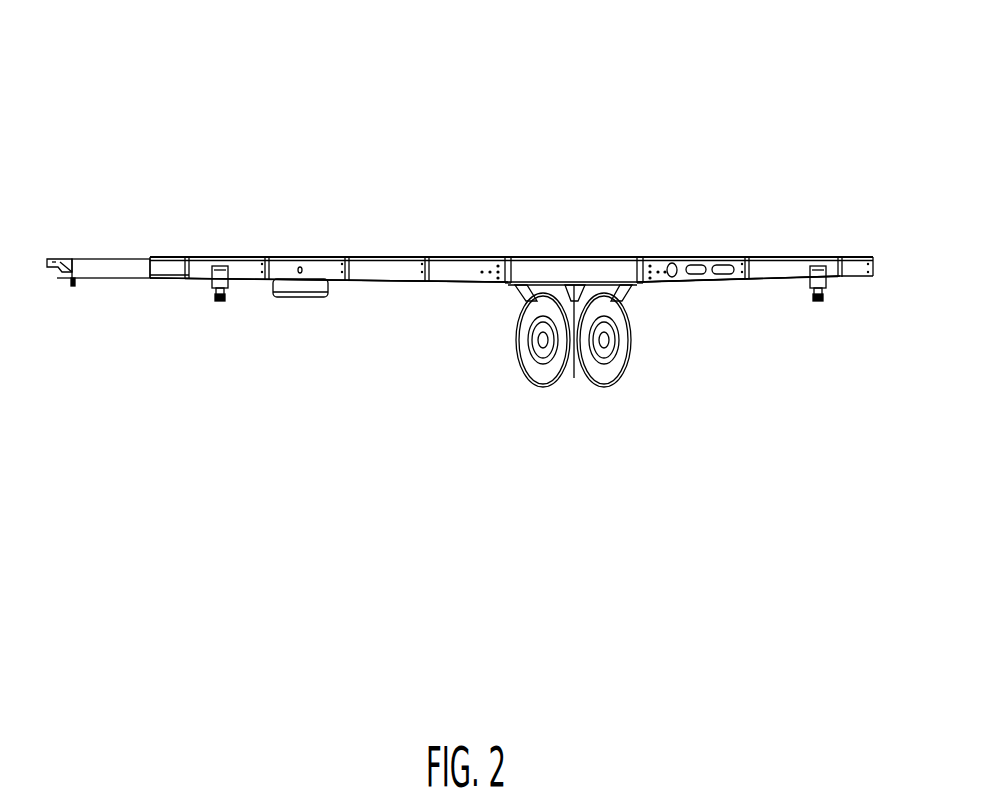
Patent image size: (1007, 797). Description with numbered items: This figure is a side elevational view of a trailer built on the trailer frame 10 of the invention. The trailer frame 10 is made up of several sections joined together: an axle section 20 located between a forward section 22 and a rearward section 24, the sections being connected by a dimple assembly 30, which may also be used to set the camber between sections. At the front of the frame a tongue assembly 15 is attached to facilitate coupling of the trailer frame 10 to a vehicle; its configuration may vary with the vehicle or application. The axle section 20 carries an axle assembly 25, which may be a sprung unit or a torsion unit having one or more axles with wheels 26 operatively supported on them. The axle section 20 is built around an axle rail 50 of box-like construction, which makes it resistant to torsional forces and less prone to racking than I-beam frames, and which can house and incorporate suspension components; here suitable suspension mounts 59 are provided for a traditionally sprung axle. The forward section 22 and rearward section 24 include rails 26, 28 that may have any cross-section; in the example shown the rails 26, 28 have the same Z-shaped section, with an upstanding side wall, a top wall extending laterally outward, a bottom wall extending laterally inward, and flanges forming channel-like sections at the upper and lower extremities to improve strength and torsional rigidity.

The trailer frame 10 is at (460, 225).
The tongue assembly 15 is at (115, 254).
The axle section 20 is at (571, 250).
The forward section 22 is at (354, 253).
The rearward section 24 is at (700, 250).
The axle assembly 25 is at (564, 362).
The wheels 26 is at (392, 276).
The rail 28 is at (765, 277).
The dimple assembly 30 is at (497, 300).
The axle rail 50 is at (646, 290).
The suspension mounts 59 is at (513, 302).